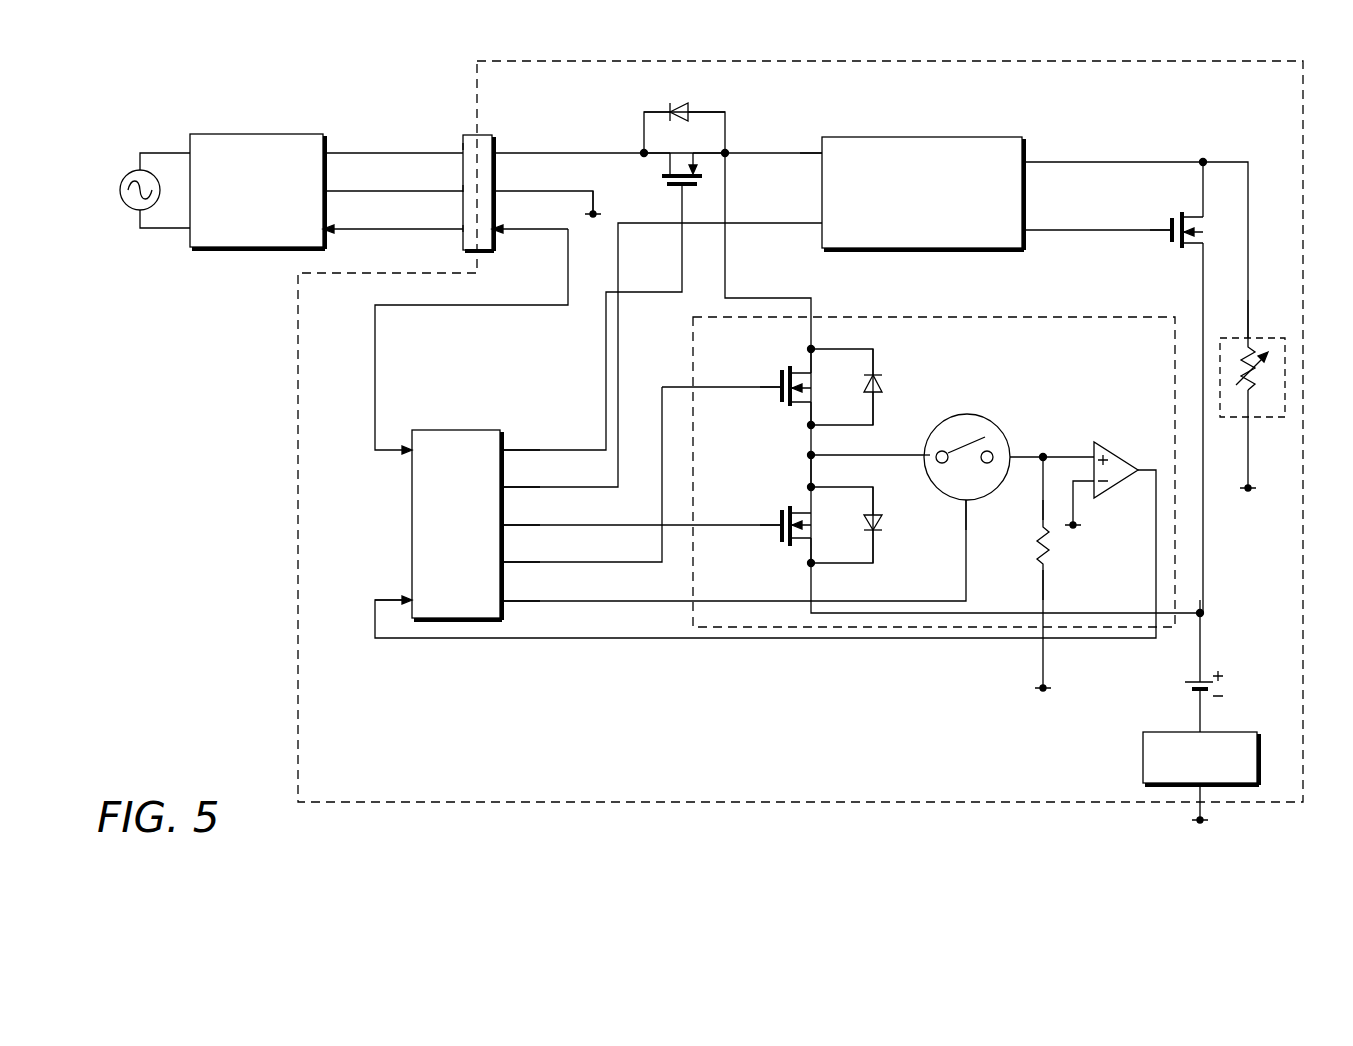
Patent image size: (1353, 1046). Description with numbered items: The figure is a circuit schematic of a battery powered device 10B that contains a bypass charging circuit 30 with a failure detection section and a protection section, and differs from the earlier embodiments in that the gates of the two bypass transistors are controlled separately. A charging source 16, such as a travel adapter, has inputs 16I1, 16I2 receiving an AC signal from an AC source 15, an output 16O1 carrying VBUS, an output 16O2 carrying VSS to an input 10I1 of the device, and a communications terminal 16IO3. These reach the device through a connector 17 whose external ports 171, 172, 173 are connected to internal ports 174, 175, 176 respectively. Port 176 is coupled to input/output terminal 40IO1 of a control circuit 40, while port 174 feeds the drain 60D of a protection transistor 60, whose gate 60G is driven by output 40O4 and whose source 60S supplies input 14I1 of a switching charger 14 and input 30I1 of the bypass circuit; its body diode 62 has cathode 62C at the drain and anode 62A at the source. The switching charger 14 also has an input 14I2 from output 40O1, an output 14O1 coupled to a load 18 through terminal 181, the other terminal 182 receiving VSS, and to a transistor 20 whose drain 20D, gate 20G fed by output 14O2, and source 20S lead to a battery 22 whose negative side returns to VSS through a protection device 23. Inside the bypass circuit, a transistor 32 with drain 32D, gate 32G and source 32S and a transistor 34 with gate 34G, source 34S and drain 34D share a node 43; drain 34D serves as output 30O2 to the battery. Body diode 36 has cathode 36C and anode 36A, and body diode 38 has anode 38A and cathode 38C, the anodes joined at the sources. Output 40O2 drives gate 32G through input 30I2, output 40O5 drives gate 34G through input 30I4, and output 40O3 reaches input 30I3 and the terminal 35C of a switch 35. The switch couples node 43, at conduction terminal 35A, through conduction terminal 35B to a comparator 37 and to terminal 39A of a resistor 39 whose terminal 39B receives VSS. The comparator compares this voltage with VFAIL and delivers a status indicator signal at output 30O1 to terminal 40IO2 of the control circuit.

The battery powered device 10B is at (1303, 118).
The input of battery powered device 10I1 is at (582, 191).
The switching charger 14 is at (957, 137).
The input of switching charger 14I1 is at (818, 150).
The input of switching charger 14I2 is at (800, 223).
The output of switching charger 14O1 is at (1030, 160).
The output of switching charger 14O2 is at (1030, 229).
The AC source 15 is at (124, 181).
The charging source 16 is at (278, 134).
The input of charging source 16I1 is at (176, 150).
The input of charging source 16I2 is at (170, 230).
The output of charging source 16O1 is at (331, 155).
The output of charging source 16O2 is at (331, 193).
The input/output terminal of charging source 16IO3 is at (350, 232).
The connector 17 is at (492, 140).
The external port of connector 171 is at (462, 148).
The external port of connector 172 is at (462, 188).
The external port of connector 173 is at (462, 230).
The internal port of connector 174 is at (500, 158).
The internal port of connector 175 is at (500, 195).
The internal port of connector 176 is at (510, 232).
The load 18 is at (1262, 338).
The terminal of load 181 is at (1246, 328).
The terminal of load 182 is at (1246, 425).
The transistor 20 is at (1170, 245).
The current carrying terminal of transistor 20 20D is at (1202, 207).
The control terminal of transistor 20 20G is at (1168, 228).
The current carrying terminal of transistor 20 20S is at (1202, 265).
The battery 22 is at (1186, 683).
The protection device 23 is at (1163, 732).
The bypass charging circuit 30 is at (690, 343).
The input of bypass charging circuit 30I1 is at (790, 300).
The input of bypass charging circuit 30I2 is at (686, 386).
The input of bypass charging circuit 30I3 is at (682, 600).
The input terminal of bypass charging circuit 30I4 is at (650, 524).
The output of bypass charging circuit 30O1 is at (1158, 645).
The output of bypass charging circuit 30O2 is at (1202, 611).
The transistor 32 is at (779, 397).
The current carrying terminal of transistor 32 32D is at (806, 352).
The control terminal of transistor 32 32G is at (775, 385).
The current carrying terminal of transistor 32 32S is at (808, 420).
The transistor 34 is at (779, 512).
The current carrying terminal of transistor 34 34D is at (808, 558).
The control terminal of transistor 34 34G is at (768, 530).
The current carrying terminal of transistor 34 34S is at (808, 490).
The switch 35 is at (950, 418).
The conduction terminal of switch 35A is at (908, 454).
The conduction terminal of switch 35B is at (1018, 456).
The control terminal of switch 35C is at (966, 524).
The body diode 36 is at (866, 376).
The anode of body diode 36 36A is at (872, 412).
The cathode of body diode 36 36C is at (880, 366).
The comparator 37 is at (1115, 455).
The body diode 38 is at (866, 514).
The anode of body diode 38 38A is at (878, 504).
The cathode of body diode 38 38C is at (872, 549).
The resistor 39 is at (1036, 545).
The terminal of resistor 39A is at (1040, 517).
The terminal of resistor 39B is at (1046, 585).
The control circuit 40 is at (474, 430).
The input/output terminal of control circuit 40IO1 is at (400, 450).
The input/output terminal of control circuit 40IO2 is at (393, 598).
The output of control circuit 40O1 is at (510, 489).
The output of control circuit 40O2 is at (510, 564).
The output of control circuit 40O3 is at (510, 603).
The output of control circuit 40O4 is at (510, 452).
The output of control circuit 40O5 is at (510, 527).
The node 43 is at (808, 455).
The transistor 60 is at (662, 190).
The current carrying terminal of transistor 60 60D is at (640, 150).
The control terminal of transistor 60 60G is at (681, 252).
The current carrying terminal of transistor 60 60S is at (705, 150).
The body diode 62 is at (665, 105).
The anode of body diode 62 62A is at (700, 110).
The cathode of body diode 62 62C is at (644, 113).